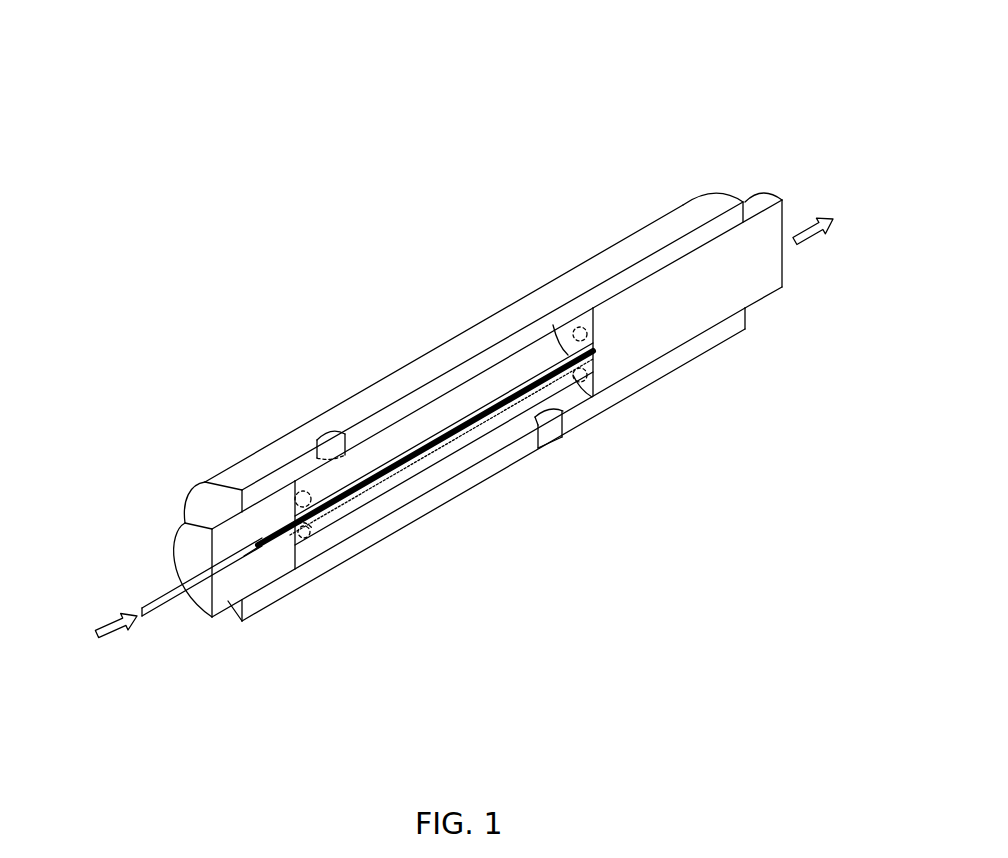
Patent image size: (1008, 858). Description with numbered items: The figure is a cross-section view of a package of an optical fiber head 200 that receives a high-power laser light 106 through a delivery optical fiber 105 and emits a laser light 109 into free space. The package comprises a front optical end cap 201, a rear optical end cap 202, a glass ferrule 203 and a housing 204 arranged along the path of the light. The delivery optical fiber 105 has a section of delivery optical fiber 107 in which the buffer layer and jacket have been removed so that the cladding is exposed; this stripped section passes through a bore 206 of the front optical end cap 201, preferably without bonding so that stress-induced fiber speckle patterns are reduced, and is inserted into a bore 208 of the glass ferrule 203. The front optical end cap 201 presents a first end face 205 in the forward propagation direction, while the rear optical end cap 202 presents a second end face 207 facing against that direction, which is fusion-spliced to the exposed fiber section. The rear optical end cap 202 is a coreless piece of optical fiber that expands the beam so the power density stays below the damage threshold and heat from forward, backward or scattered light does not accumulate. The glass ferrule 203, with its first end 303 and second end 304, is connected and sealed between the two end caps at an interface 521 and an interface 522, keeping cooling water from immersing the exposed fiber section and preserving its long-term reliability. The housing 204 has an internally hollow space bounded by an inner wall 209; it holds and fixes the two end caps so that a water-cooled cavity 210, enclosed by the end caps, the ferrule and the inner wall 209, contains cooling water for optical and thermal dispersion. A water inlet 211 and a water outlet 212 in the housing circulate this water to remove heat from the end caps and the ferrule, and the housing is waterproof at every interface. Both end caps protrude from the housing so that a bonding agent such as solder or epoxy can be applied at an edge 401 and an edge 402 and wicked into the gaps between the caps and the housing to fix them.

The delivery optical fiber 105 is at (168, 585).
The high-power laser light 106 is at (105, 618).
The section of delivery optical fiber with the cladding exposed 107 is at (386, 478).
The laser light 109 is at (820, 240).
The package of an optical fiber head 200 is at (497, 250).
The front optical end cap 201 is at (266, 585).
The rear optical end cap 202 is at (744, 300).
The glass ferrule 203 is at (415, 426).
The housing 204 is at (683, 203).
The first end face 205 is at (296, 547).
The bore 206 is at (250, 547).
The second end face 207 is at (573, 328).
The bore 208 is at (553, 390).
The inner wall 209 is at (465, 378).
The water-cooled cavity 210 is at (527, 336).
The water inlet 211 is at (333, 430).
The second notch 212 is at (545, 425).
The first end 303 is at (310, 530).
The second end 304 is at (586, 367).
The edge 401 is at (232, 507).
The edge 402 is at (744, 200).
The interface 521 is at (299, 491).
The interface 522 is at (582, 327).